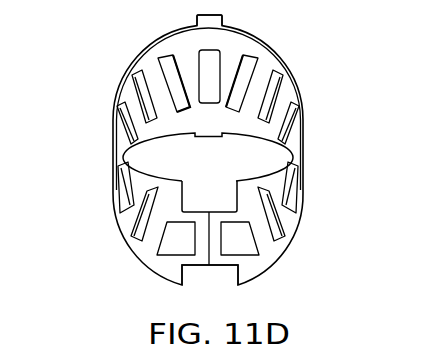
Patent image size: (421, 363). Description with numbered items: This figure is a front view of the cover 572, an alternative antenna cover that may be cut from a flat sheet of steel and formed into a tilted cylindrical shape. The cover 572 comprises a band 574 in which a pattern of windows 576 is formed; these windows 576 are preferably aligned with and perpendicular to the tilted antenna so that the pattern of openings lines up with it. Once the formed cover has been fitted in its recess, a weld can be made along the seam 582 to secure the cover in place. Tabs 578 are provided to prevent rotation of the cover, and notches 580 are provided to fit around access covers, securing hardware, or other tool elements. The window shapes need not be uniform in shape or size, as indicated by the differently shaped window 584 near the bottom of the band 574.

The cover 572 is at (84, 224).
The band 574 is at (139, 52).
The windows 576 is at (173, 61).
The tabs 578 is at (223, 21).
The notches 580 is at (186, 196).
The seam 582 is at (210, 268).
The window 584 is at (168, 251).